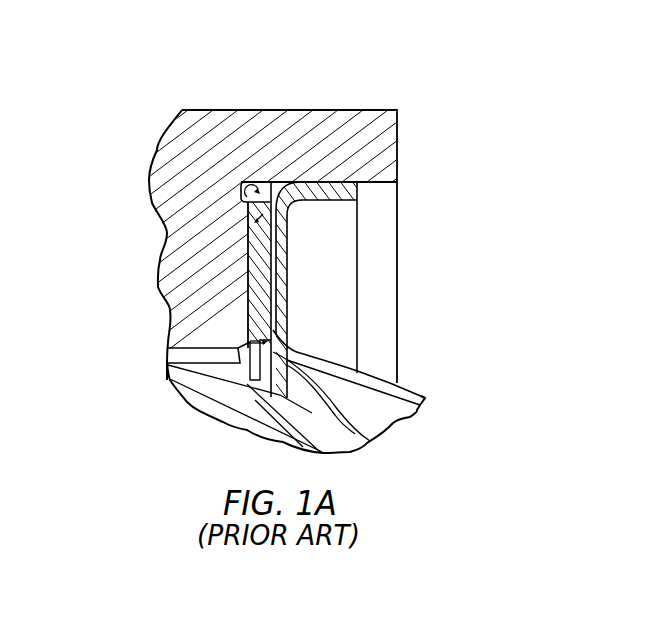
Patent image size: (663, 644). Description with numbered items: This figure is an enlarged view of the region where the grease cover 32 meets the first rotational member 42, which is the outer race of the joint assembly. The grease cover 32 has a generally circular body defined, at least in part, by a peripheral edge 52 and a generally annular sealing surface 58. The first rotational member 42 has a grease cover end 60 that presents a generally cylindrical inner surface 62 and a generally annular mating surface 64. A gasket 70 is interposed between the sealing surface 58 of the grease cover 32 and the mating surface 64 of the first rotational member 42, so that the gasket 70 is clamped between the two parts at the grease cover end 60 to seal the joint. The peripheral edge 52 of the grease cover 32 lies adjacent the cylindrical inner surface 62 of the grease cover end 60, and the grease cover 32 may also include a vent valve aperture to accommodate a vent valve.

The grease cover end 60 is at (408, 138).
The first rotational member 42 is at (348, 120).
The mating surface 64 is at (272, 184).
The inner surface 62 is at (240, 190).
The peripheral edge 52 is at (333, 190).
The gasket 70 is at (263, 268).
The sealing surface 58 is at (240, 360).
The grease cover 32 is at (368, 380).